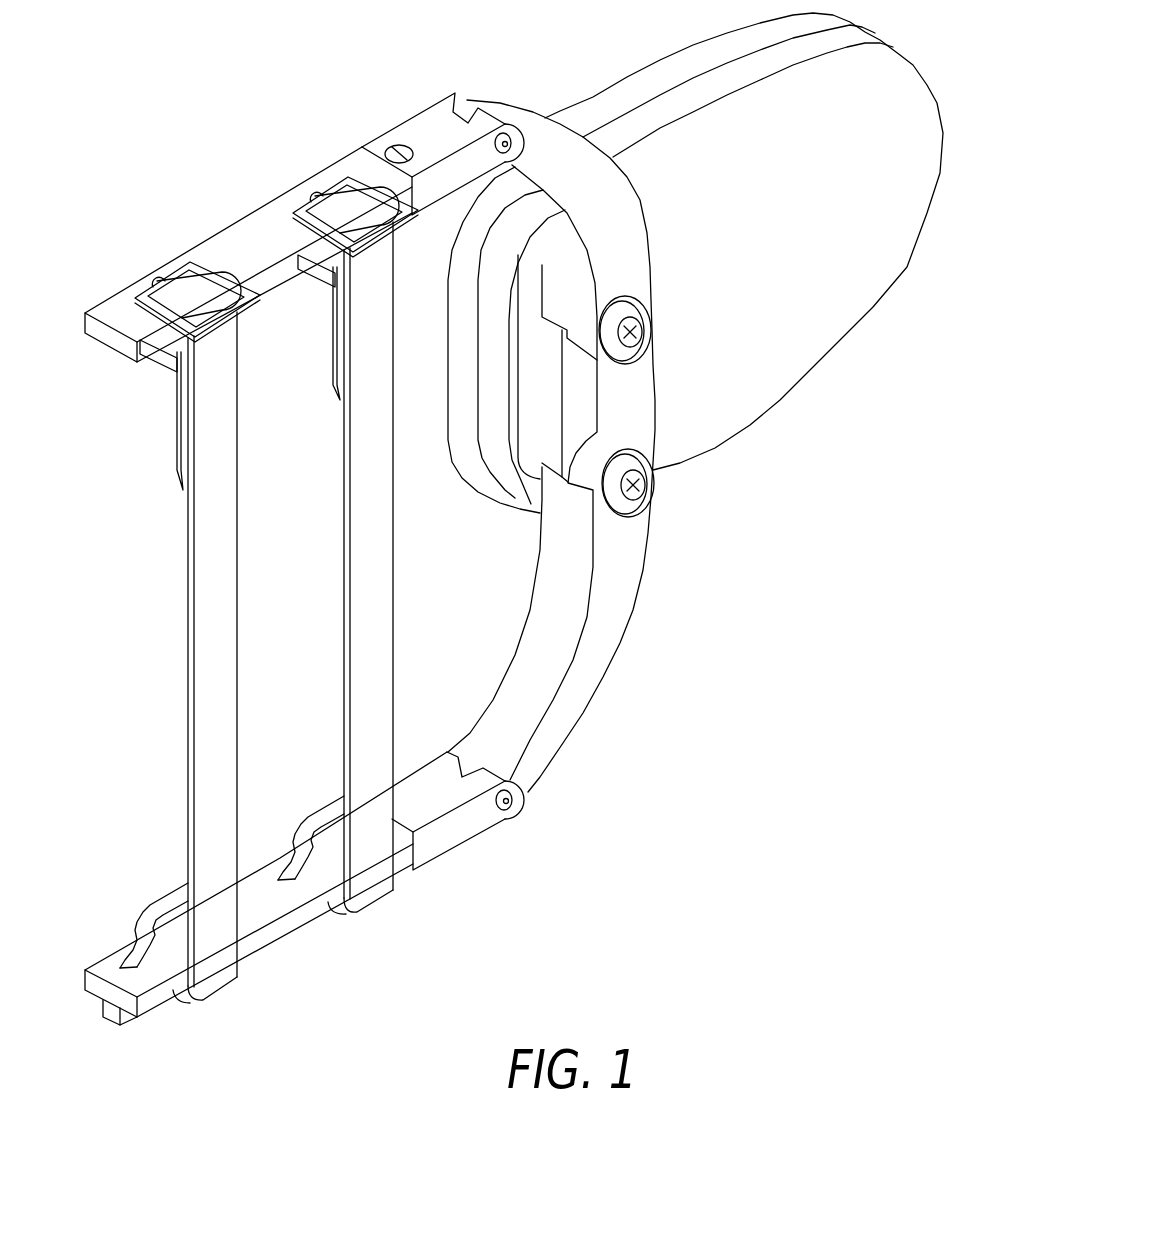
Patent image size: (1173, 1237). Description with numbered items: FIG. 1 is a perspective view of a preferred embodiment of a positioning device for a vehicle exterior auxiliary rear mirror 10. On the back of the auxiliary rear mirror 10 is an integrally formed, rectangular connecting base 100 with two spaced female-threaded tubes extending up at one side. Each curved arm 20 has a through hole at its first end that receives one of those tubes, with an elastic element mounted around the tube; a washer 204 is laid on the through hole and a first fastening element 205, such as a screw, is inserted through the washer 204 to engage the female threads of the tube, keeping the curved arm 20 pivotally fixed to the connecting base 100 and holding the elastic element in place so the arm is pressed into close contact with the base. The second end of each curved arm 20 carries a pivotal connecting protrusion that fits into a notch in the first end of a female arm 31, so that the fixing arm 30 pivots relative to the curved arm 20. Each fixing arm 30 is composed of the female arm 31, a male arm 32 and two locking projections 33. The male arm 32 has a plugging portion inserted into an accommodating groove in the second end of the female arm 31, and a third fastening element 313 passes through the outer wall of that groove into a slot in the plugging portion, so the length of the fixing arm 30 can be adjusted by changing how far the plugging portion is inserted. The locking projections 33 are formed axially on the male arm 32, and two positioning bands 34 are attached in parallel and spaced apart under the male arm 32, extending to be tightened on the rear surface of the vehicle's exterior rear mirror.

The auxiliary rear mirror 10 is at (875, 255).
The curved arm 20 is at (573, 163).
The connecting base 100 is at (597, 400).
The washer 204 is at (640, 322).
The first fastening element 205 is at (628, 332).
The fixing arm 30 is at (304, 524).
The female arm 31 is at (418, 125).
The third fastening element 313 is at (352, 115).
The male arm 32 is at (255, 232).
The locking projection 33 is at (163, 368).
The positioning band 34 is at (208, 620).